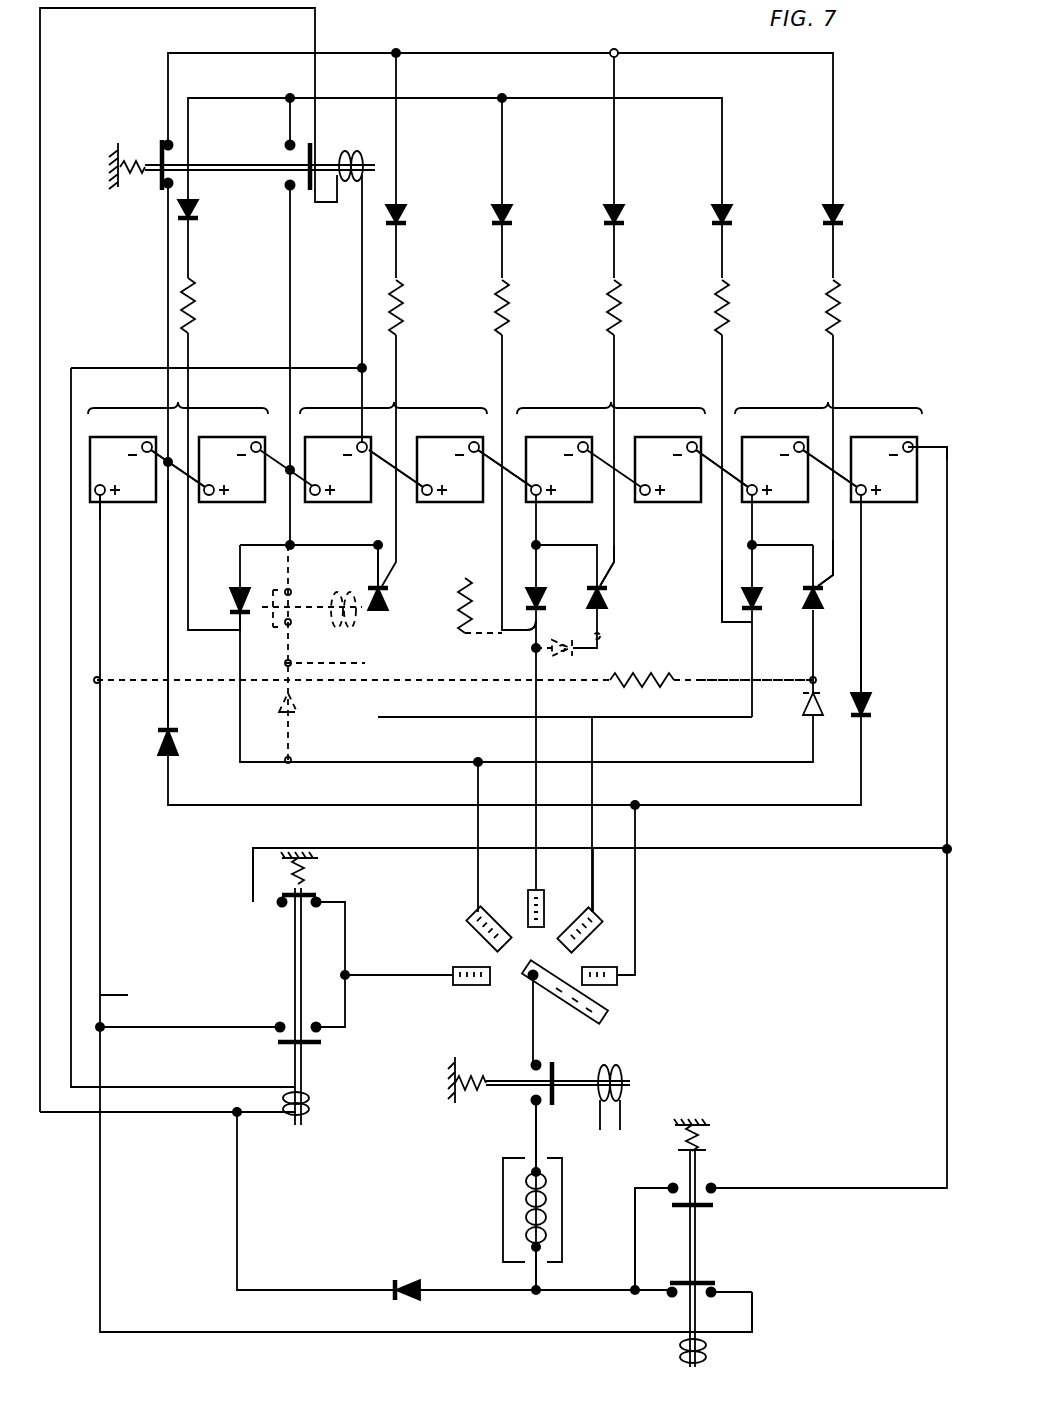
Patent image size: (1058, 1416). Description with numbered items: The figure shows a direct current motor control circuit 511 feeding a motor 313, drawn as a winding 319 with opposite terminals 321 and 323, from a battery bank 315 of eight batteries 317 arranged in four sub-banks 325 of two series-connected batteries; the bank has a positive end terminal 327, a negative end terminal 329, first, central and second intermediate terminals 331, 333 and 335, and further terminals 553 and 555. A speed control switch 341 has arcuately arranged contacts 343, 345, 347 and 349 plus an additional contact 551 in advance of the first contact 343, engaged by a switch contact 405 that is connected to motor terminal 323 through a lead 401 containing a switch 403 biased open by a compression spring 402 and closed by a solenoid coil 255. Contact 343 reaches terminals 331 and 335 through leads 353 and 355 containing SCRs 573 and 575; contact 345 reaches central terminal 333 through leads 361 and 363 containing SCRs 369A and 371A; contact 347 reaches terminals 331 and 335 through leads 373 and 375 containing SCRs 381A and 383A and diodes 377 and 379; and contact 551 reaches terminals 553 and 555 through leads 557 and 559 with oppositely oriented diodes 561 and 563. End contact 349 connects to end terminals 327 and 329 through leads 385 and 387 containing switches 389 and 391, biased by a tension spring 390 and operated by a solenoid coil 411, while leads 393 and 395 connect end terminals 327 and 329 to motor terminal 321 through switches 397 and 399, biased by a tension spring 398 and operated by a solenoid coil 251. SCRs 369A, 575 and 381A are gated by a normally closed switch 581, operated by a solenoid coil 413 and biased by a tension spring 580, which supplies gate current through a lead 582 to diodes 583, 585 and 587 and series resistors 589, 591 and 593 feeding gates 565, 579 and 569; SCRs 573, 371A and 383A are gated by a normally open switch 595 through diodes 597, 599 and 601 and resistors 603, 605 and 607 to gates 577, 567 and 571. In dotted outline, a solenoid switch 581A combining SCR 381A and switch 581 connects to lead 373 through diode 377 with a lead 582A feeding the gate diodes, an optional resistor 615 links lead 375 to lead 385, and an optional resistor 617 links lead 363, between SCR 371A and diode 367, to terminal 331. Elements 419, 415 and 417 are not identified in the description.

The tension spring 580 is at (134, 163).
The lead 582 is at (288, 126).
The solenoid coil 413 is at (352, 152).
The switch 595 is at (160, 190).
The switch 581 is at (300, 175).
The diode 587 is at (195, 216).
The resistor 593 is at (195, 305).
The diode 597 is at (402, 220).
The diode 583 is at (510, 220).
The diode 599 is at (622, 220).
The diode 585 is at (730, 220).
The diode 601 is at (845, 218).
The resistor 603 is at (404, 302).
The resistor 589 is at (510, 300).
The resistor 605 is at (622, 302).
The resistor 591 is at (730, 300).
The resistor 607 is at (841, 312).
The battery bank 315 is at (517, 855).
The sub-banks 325 is at (772, 392).
The negative end terminal 329 is at (912, 440).
The batteries 317 is at (136, 445).
The first intermediate terminal 331 is at (300, 448).
The positive end terminal 327 is at (104, 498).
The battery terminal 553 is at (170, 470).
The interconnecting conductor 419 is at (374, 456).
The resistor 617 is at (467, 578).
The central intermediate terminal 333 is at (552, 498).
The second intermediate terminal 335 is at (755, 500).
The battery terminal 555 is at (866, 498).
The SCR 381A is at (230, 596).
The lead 557 is at (168, 602).
The gate 569 is at (238, 616).
The solenoid switch 581A is at (291, 590).
The lead 582A is at (322, 700).
The diode 377 is at (292, 730).
The gate 577 is at (381, 566).
The SCR 573 is at (392, 604).
The gate 565 is at (527, 630).
The lead 361 is at (550, 652).
The gate 567 is at (606, 584).
The SCR 371A is at (608, 598).
The SCR 369A is at (548, 600).
The lead 363 is at (600, 650).
The diode 367 is at (560, 660).
The resistor 615 is at (668, 694).
The SCR 575 is at (754, 592).
The gate 571 is at (822, 584).
The SCR 383A is at (826, 598).
The gate 579 is at (742, 622).
The lead 559 is at (866, 650).
The lead 375 is at (806, 680).
The diode 563 is at (872, 705).
The diode 379 is at (806, 716).
The lead 353 is at (486, 718).
The lead 355 is at (690, 720).
The diode 561 is at (172, 758).
The lead 373 is at (400, 764).
The tension spring 390 is at (292, 874).
The circuit 511 is at (600, 875).
The switch 391 is at (283, 904).
The second contact 345 is at (545, 892).
The third contact 347 is at (470, 918).
The first contact 343 is at (598, 926).
The fourth or end contact 349 is at (455, 968).
The additional contact 551 is at (620, 982).
The switch contact 405 is at (606, 1014).
The speed control switch 341 is at (471, 1005).
The lead 385 is at (178, 1027).
The switch 389 is at (278, 1043).
The compression spring 402 is at (490, 1045).
The switch 403 is at (556, 1074).
The solenoid coil 255 is at (622, 1102).
The solenoid coil 411 is at (300, 1118).
The lead 401 is at (534, 1135).
The tension spring 398 is at (698, 1136).
The motor terminal 323 is at (532, 1172).
The winding 319 is at (525, 1196).
The motor 313 is at (502, 1228).
The lead 395 is at (634, 1210).
The switch 399 is at (713, 1206).
The motor terminal 321 is at (540, 1247).
The switch 397 is at (702, 1283).
The diode 417 is at (400, 1282).
The conductor 415 is at (462, 1283).
The lead 393 is at (232, 1332).
The solenoid coil 251 is at (715, 1350).
The lead 387 is at (862, 850).